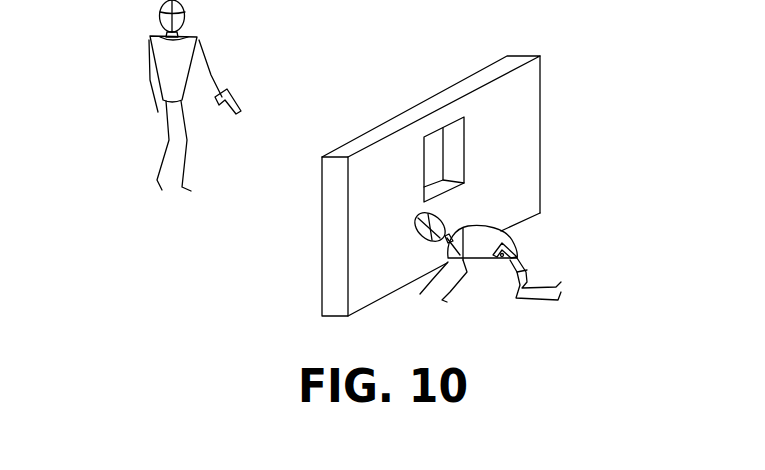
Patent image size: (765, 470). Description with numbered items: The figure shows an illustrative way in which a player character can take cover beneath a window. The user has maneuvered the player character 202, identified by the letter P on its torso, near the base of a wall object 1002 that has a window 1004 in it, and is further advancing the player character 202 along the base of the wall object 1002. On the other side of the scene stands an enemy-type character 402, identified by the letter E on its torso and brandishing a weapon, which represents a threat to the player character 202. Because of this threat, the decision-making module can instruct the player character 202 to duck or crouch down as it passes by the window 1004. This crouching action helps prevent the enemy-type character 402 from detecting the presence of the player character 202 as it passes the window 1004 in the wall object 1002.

The enemy-type character 402 is at (157, 129).
The wall object 1002 is at (520, 111).
The window 1004 is at (473, 163).
The player character 202 is at (577, 296).